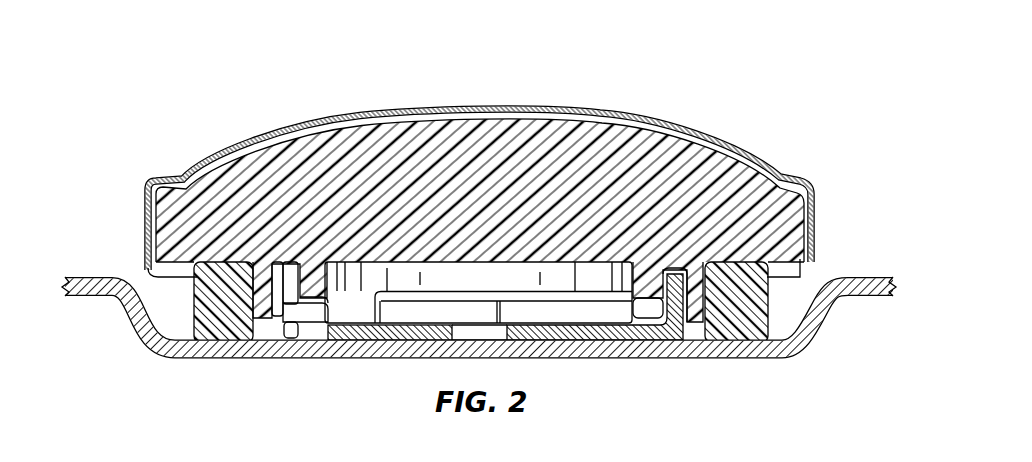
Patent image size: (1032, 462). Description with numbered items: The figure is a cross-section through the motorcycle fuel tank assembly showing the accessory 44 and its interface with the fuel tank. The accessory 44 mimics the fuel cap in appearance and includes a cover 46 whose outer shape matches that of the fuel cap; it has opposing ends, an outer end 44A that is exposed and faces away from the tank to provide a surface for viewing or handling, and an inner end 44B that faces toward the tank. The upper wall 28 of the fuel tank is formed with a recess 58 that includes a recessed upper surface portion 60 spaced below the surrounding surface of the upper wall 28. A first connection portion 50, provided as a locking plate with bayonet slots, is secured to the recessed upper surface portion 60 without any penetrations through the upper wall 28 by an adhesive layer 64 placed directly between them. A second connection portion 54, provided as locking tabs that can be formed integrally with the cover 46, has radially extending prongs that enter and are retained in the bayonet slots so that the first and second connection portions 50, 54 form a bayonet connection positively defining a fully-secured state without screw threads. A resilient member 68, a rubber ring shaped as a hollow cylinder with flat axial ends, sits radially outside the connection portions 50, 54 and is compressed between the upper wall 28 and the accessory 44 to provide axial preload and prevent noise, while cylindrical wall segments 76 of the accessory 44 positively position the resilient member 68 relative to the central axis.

The accessory 44 is at (187, 134).
The outer end 44A is at (503, 107).
The inner end 44B is at (181, 266).
The cover 46 is at (793, 193).
The recess 58 is at (808, 296).
The upper wall 28 is at (876, 278).
The resilient member 68 is at (200, 323).
The second connection portion 54 is at (303, 320).
The adhesive layer 64 is at (323, 344).
The first connection portion 50 is at (633, 327).
The cylindrical wall segments 76 is at (674, 331).
The recessed upper surface portion 60 is at (773, 333).